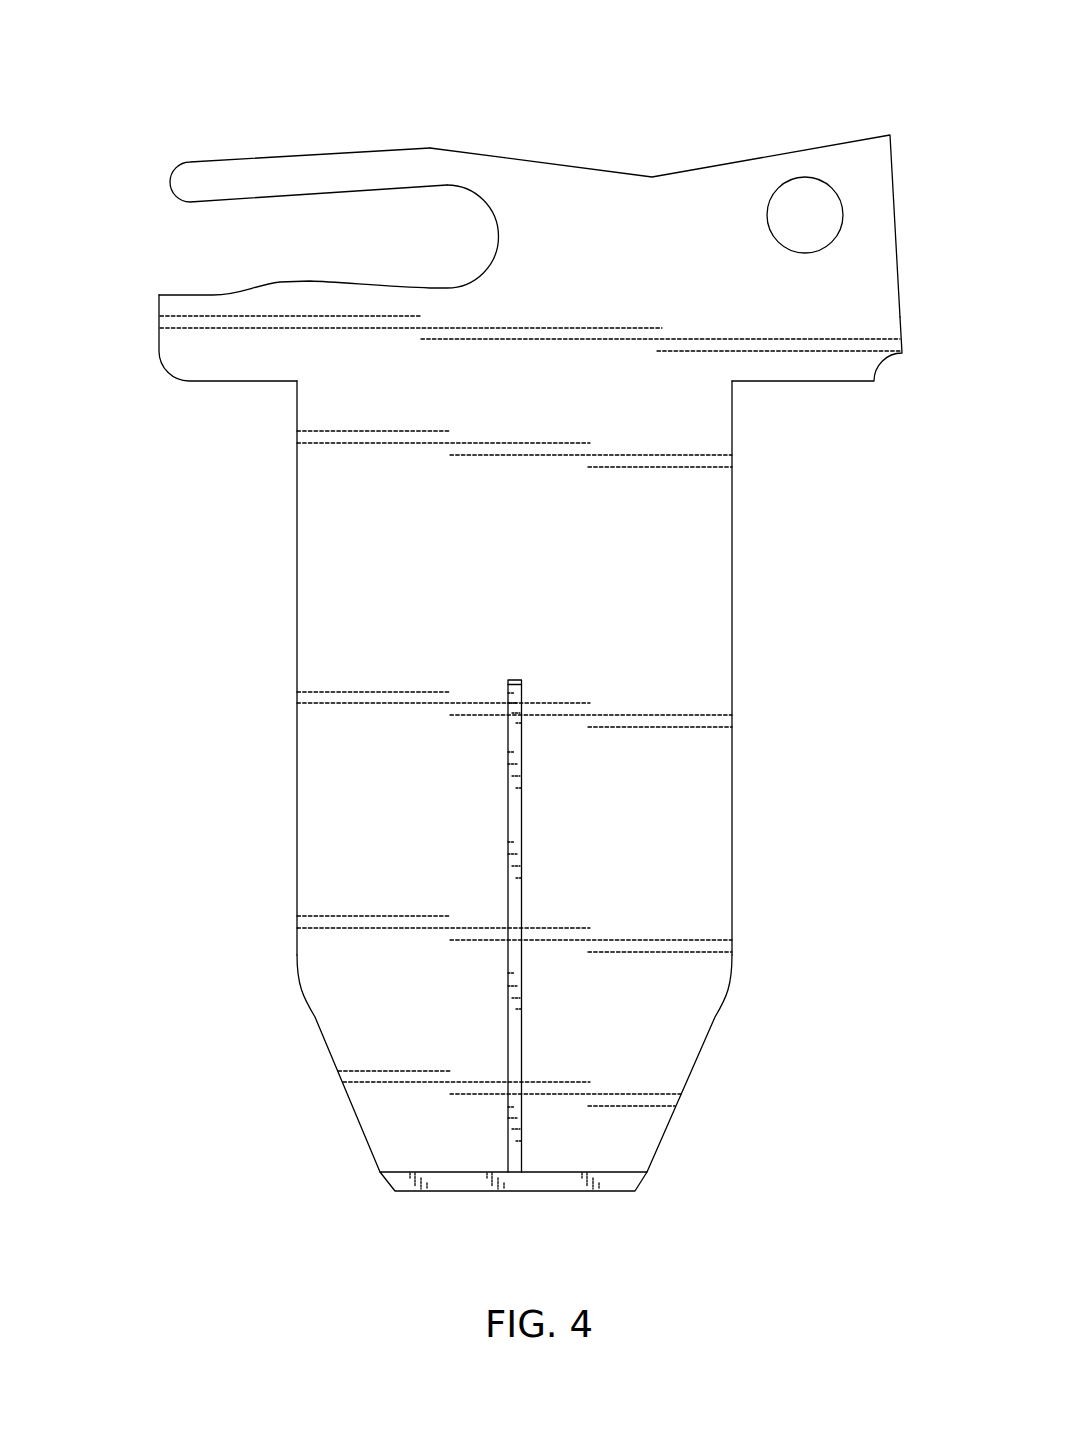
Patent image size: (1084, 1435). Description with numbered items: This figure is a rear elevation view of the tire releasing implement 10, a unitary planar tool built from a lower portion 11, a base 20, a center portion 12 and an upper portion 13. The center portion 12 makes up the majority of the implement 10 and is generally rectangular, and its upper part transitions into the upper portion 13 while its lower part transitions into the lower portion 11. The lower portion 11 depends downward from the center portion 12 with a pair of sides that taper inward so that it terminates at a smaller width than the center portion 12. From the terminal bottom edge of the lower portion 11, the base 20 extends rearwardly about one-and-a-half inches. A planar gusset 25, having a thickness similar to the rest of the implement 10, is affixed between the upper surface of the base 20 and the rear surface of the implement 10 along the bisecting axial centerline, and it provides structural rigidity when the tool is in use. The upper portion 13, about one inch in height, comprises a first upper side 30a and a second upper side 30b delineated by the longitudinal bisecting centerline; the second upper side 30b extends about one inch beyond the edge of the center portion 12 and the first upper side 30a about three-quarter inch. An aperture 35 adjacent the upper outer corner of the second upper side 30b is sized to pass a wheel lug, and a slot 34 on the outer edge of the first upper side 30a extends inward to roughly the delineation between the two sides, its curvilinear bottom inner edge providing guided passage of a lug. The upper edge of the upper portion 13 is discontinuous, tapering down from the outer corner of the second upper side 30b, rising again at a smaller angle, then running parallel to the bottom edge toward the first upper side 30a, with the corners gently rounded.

The tire releasing implement 10 is at (158, 172).
The lower portion 11 is at (611, 1033).
The center portion 12 is at (586, 541).
The upper portion 13 is at (572, 254).
The base 20 is at (550, 1181).
The gusset 25 is at (515, 952).
The first upper side 30a is at (215, 352).
The second upper side 30b is at (847, 350).
The slot 34 is at (256, 247).
The aperture 35 is at (802, 207).